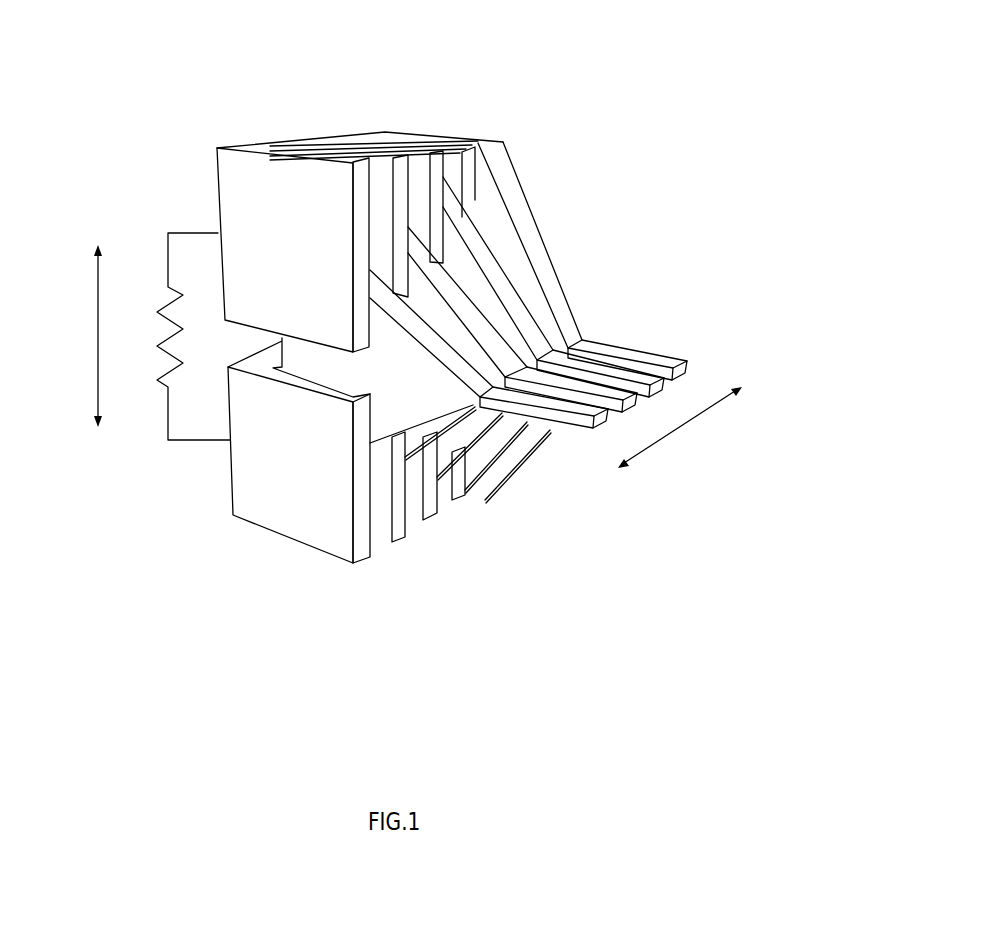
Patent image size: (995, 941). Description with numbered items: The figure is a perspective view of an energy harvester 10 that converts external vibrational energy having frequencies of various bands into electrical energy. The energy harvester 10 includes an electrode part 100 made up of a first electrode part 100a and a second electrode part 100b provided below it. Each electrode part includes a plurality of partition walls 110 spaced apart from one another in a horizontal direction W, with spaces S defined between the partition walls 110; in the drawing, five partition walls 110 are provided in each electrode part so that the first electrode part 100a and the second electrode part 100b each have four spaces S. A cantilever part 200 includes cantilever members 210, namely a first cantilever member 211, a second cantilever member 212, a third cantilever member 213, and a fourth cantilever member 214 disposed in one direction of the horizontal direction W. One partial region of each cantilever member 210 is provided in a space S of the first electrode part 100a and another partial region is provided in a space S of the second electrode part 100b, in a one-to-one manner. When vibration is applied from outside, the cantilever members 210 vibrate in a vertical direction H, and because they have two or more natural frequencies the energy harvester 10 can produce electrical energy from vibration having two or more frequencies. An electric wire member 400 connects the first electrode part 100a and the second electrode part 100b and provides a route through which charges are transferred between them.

The energy harvester 10 is at (192, 30).
The electrode part 100 is at (722, 86).
The first electrode part 100a is at (172, 150).
The second electrode part 100b is at (206, 488).
The partition wall 110 is at (355, 137).
The space S is at (426, 177).
The electric wire member 400 is at (182, 232).
The vertical direction H is at (84, 337).
The horizontal direction W is at (684, 430).
The cantilever part 200 is at (542, 670).
The cantilever member 210 is at (635, 619).
The first cantilever member 211 is at (410, 407).
The second cantilever member 212 is at (447, 420).
The third cantilever member 213 is at (480, 420).
The fourth cantilever member 214 is at (513, 420).